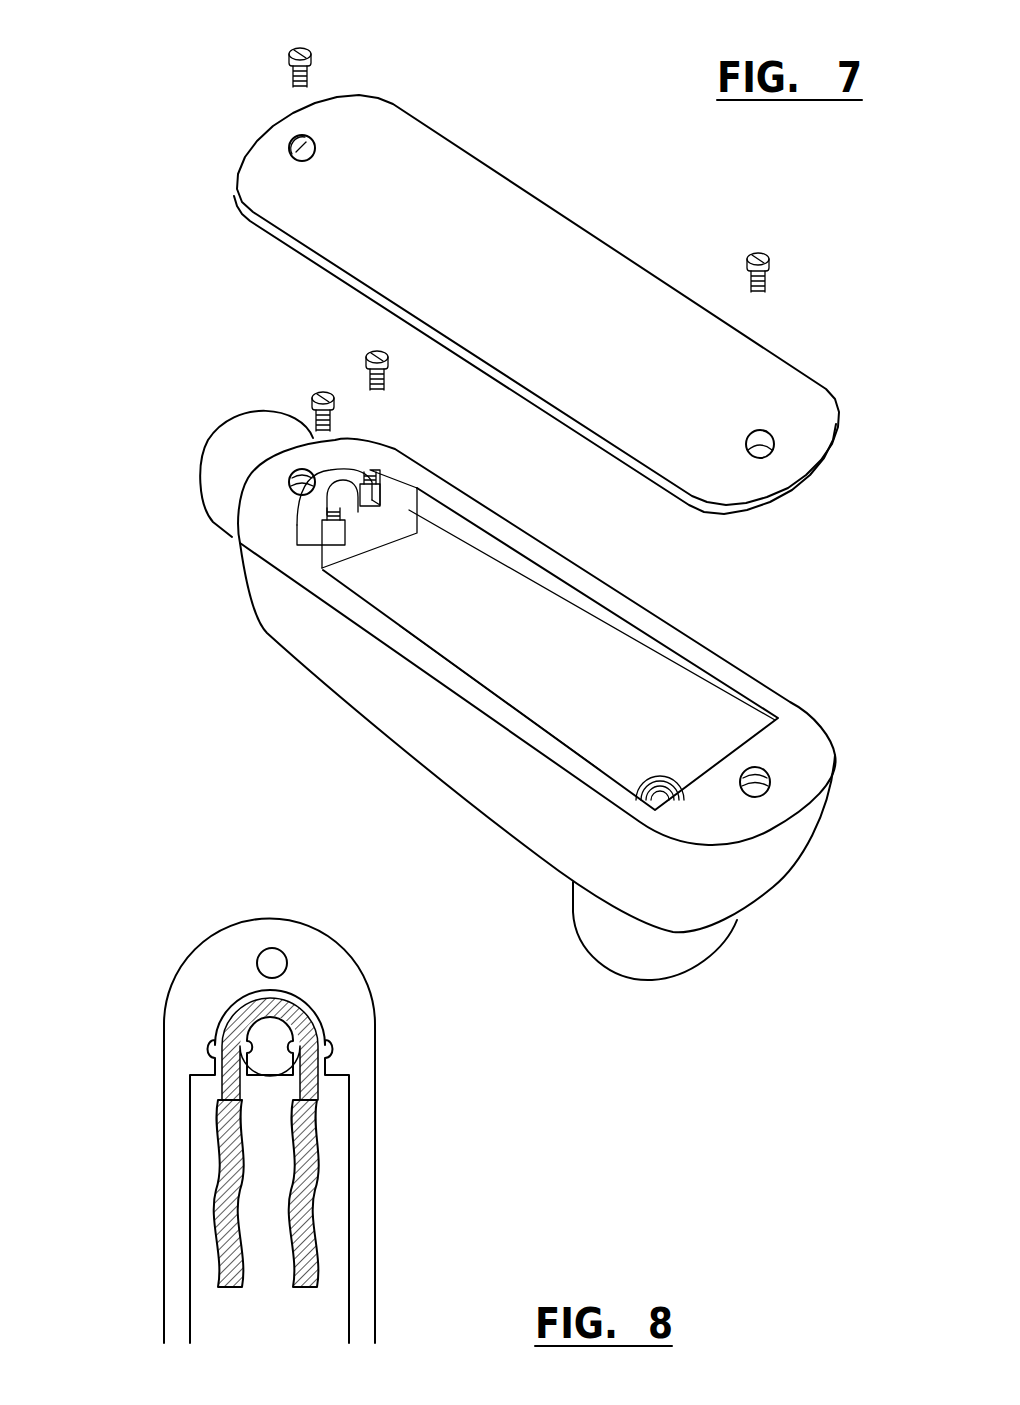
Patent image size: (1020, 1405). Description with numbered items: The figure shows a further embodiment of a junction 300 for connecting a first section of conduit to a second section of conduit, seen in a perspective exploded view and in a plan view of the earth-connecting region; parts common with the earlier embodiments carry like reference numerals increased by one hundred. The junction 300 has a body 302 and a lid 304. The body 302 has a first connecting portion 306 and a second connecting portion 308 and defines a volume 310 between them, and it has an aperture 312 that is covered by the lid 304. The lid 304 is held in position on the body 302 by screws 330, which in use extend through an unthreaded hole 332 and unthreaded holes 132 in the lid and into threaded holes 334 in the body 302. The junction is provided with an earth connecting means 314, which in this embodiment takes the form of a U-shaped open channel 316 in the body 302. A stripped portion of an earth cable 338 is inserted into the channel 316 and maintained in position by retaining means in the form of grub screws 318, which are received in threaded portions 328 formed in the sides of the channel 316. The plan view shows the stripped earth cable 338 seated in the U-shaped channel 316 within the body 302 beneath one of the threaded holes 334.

In FIG. 7, the junction 300 is at (460, 809).
In FIG. 8, the junction 300 is at (384, 1091).
In FIG. 7, the body 302 is at (760, 873).
In FIG. 8, the body 302 is at (205, 988).
In FIG. 7, the lid 304 is at (545, 280).
In FIG. 7, the first connecting portion 306 is at (237, 457).
In FIG. 7, the second connecting portion 308 is at (667, 953).
In FIG. 7, the volume 310 is at (626, 692).
In FIG. 8, the volume 310 is at (269, 1166).
In FIG. 7, the aperture 312 is at (465, 672).
In FIG. 8, the aperture 312 is at (347, 1320).
In FIG. 7, the earth connecting means 314 is at (404, 559).
In FIG. 7, the U-shaped open channel 316 is at (418, 507).
In FIG. 8, the U-shaped open channel 316 is at (318, 1018).
In FIG. 7, the retaining means (grub screws) 318 is at (318, 398).
In FIG. 7, the threaded portions 328 is at (335, 545).
In FIG. 7, the screws 330 is at (290, 56).
In FIG. 7, the unthreaded hole 332 is at (292, 144).
In FIG. 7, the threaded holes 334 is at (290, 488).
In FIG. 8, the threaded holes 334 is at (268, 962).
In FIG. 8, the earth cable 338 is at (317, 1230).
In FIG. 7, the unthreaded holes 132 is at (766, 450).